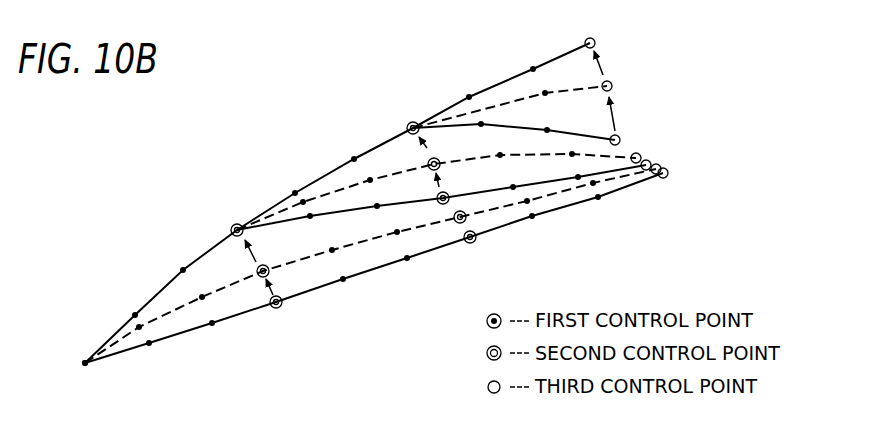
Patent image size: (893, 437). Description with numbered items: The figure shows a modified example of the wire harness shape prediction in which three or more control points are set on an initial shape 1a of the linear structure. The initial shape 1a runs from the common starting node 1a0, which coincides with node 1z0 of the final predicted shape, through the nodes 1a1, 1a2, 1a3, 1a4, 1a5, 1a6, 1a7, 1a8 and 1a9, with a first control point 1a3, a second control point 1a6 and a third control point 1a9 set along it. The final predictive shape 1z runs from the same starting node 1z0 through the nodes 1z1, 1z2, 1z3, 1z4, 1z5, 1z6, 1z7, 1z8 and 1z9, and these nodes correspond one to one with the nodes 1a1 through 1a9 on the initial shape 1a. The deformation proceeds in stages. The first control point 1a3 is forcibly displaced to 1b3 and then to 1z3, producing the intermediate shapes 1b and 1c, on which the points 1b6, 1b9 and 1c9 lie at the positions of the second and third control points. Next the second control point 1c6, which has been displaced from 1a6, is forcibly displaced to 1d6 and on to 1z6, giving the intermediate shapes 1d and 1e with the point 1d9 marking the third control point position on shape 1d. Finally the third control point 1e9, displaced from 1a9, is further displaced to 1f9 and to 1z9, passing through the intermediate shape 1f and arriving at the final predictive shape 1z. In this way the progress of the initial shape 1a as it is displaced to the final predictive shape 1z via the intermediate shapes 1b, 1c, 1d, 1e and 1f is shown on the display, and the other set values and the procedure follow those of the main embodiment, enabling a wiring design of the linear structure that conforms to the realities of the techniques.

The initial shape 1a is at (313, 300).
The final predictive shape 1z is at (325, 173).
The intermediate shape 1b is at (346, 246).
The intermediate shape 1c is at (371, 208).
The intermediate shape 1d is at (353, 184).
The intermediate shape 1e is at (558, 128).
The intermediate shape 1f is at (552, 90).
The node on initial shape 1a0 is at (86, 366).
The node on final predictive shape 1z0 is at (117, 390).
The node on initial shape 1a1 is at (150, 346).
The node on initial shape 1a2 is at (213, 326).
The first control point 1a3 is at (277, 308).
The node on initial shape 1a4 is at (343, 283).
The node on initial shape 1a5 is at (407, 262).
The second control point 1a6 is at (470, 243).
The node on initial shape 1a7 is at (532, 220).
The node on initial shape 1a8 is at (598, 200).
The third control point 1a9 is at (663, 178).
The node on final predictive shape 1z1 is at (133, 312).
The node on final predictive shape 1z2 is at (181, 267).
The node on final predictive shape 1z3 is at (233, 226).
The node on final predictive shape 1z4 is at (292, 191).
The node on final predictive shape 1z5 is at (354, 156).
The node on final predictive shape 1z6 is at (413, 122).
The node on final predictive shape 1z7 is at (469, 94).
The node on final predictive shape 1z8 is at (533, 66).
The node on final predictive shape 1z9 is at (594, 40).
The displaced first control point 1b3 is at (268, 268).
The node on intermediate shape 1b6 is at (460, 223).
The node on intermediate shape 1b9 is at (661, 172).
The second control point 1c6 is at (448, 194).
The node on intermediate shape 1c9 is at (650, 162).
The displaced second control point 1d6 is at (439, 160).
The node on intermediate shape 1d9 is at (640, 153).
The third control point 1e9 is at (618, 136).
The displaced third control point 1f9 is at (610, 82).